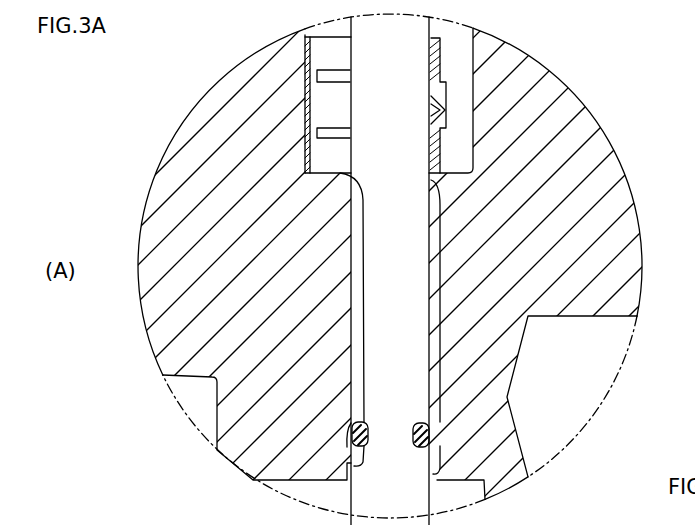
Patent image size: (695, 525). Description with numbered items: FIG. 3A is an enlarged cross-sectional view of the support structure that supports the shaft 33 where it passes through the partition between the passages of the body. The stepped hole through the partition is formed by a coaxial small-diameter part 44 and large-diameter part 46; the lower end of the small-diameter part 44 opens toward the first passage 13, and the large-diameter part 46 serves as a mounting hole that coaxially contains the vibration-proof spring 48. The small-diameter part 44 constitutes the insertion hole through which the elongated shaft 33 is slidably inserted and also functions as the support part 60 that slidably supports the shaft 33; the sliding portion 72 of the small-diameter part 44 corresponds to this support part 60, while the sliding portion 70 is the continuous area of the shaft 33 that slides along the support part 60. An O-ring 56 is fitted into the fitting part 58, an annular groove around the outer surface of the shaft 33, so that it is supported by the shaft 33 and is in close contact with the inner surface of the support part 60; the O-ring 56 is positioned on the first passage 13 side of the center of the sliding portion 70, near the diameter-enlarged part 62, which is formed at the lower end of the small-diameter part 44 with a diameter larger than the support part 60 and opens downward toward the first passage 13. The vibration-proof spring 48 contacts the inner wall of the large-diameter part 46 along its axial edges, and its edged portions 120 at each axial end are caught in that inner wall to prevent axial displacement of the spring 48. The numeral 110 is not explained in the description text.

The first passage 13 is at (313, 500).
The shaft 33 is at (440, 153).
The small-diameter part 44 is at (352, 240).
The large-diameter part 46 is at (312, 103).
The vibration-proof spring 48 is at (452, 71).
The O-ring 56 is at (352, 433).
The fitting part 58 is at (352, 428).
The support part 60 is at (354, 332).
The diameter-enlarged part 62 is at (352, 465).
The sliding portion 70 is at (444, 332).
The sliding portion 72 is at (366, 322).
The housing 110 is at (640, 515).
The edged portions 120 is at (306, 35).